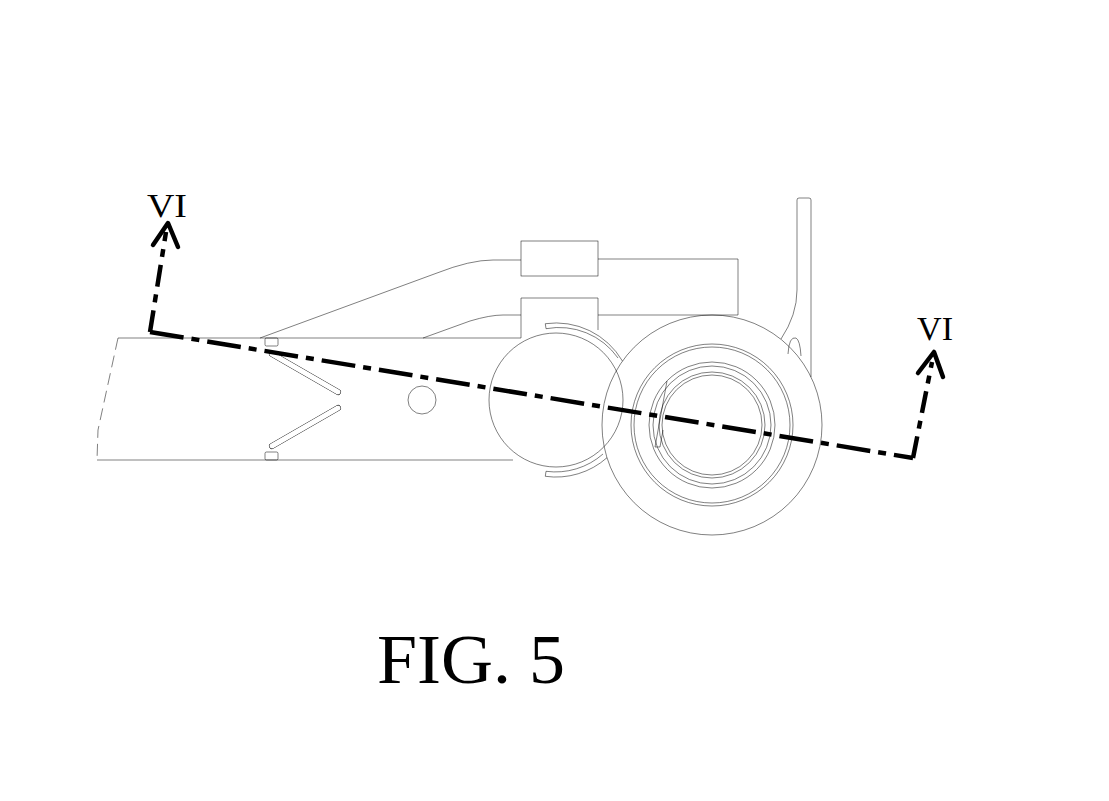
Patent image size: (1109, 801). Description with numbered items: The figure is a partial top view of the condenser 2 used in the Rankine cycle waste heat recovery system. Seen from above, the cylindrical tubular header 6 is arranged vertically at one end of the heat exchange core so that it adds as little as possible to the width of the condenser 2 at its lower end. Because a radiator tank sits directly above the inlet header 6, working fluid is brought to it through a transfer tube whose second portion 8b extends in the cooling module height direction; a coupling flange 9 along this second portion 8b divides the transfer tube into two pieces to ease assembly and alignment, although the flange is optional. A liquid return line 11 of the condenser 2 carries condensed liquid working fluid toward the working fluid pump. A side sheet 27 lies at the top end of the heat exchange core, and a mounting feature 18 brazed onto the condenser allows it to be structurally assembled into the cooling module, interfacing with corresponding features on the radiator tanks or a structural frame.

The condenser 2 is at (633, 145).
The tubular header 6 is at (532, 465).
The second portion of transfer tube 8b is at (670, 537).
The coupling flange 9 is at (767, 512).
The liquid return line 11 is at (433, 302).
The mounting feature 18 is at (812, 238).
The side sheet 27 is at (180, 428).